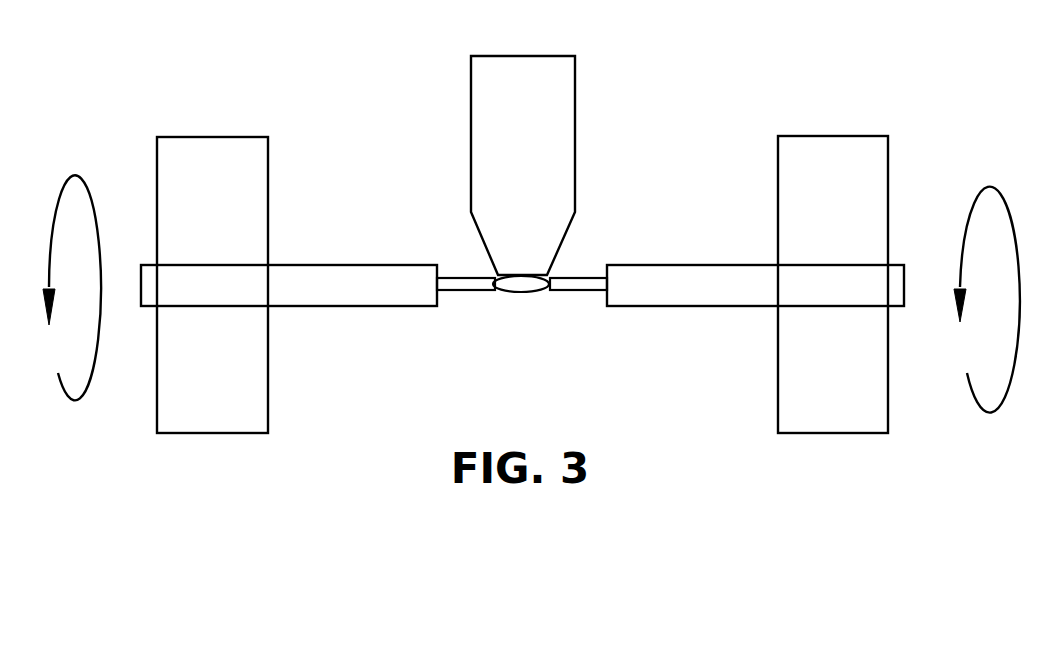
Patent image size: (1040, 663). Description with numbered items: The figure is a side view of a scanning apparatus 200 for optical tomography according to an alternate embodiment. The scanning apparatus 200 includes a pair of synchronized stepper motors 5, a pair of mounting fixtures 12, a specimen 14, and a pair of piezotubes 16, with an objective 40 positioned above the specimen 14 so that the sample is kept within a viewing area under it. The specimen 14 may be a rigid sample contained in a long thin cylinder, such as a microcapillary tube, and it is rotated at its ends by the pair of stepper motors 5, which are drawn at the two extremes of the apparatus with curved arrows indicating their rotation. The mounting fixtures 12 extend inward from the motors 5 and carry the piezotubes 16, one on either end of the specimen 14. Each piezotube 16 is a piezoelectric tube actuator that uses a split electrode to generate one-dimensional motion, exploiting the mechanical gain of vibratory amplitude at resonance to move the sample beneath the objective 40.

The scanning apparatus 200 is at (217, 52).
The synchronized stepper motors 5 is at (203, 397).
The objective 40 is at (508, 165).
The mounting fixtures 12 is at (413, 308).
The piezotubes 16 is at (465, 292).
The specimen 14 is at (517, 292).